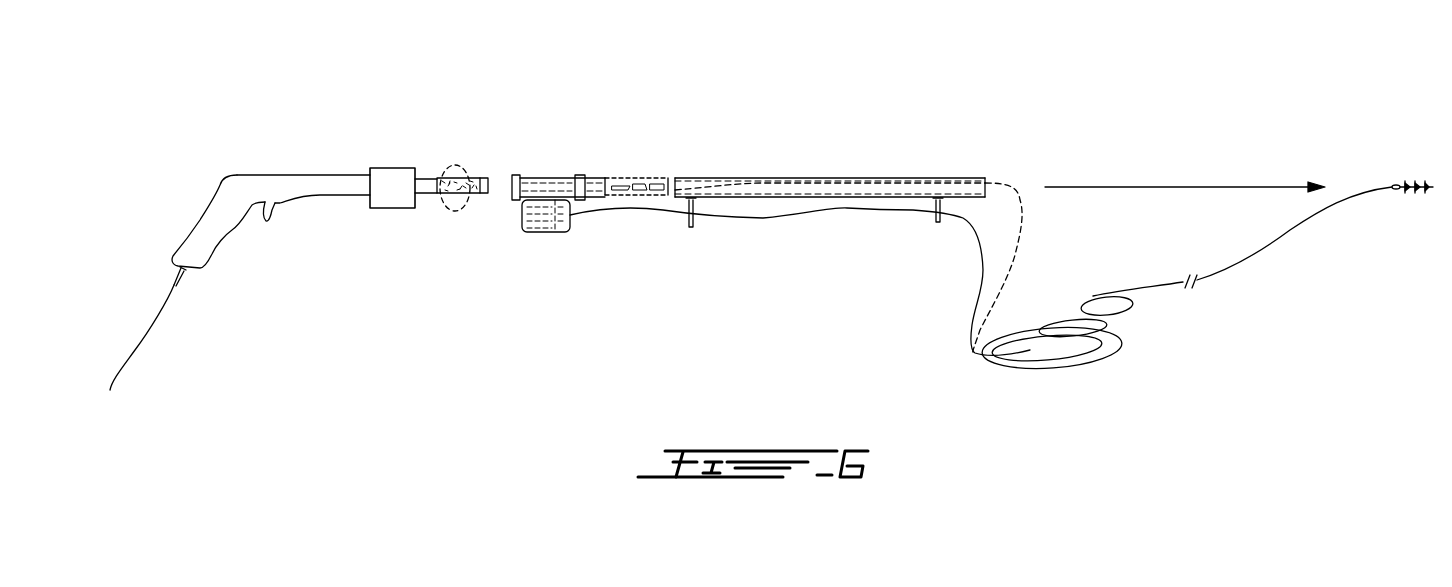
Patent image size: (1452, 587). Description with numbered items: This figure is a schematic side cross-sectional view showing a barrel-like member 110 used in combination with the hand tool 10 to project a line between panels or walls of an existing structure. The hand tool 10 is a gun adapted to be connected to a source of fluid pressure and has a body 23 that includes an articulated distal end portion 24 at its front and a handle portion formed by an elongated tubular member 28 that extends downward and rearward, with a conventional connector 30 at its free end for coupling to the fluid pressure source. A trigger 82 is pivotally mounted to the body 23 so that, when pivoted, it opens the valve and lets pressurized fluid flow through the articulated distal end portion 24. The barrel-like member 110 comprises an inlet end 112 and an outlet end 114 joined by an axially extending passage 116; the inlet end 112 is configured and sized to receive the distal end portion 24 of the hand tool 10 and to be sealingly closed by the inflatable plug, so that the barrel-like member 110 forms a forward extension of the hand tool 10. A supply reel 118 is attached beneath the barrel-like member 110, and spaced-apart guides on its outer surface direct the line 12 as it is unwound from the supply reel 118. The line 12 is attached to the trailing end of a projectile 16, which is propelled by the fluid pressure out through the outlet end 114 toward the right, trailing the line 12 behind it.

The hand tool 10 is at (307, 227).
The body 23 is at (336, 172).
The elongated tubular member 28 is at (208, 217).
The trigger 82 is at (277, 207).
The connector 30 is at (183, 273).
The articulated distal end portion 24 is at (477, 178).
The barrel-like member 110 is at (766, 205).
The inlet end 112 is at (505, 185).
The supply reel 118 is at (535, 228).
The axially extending passage 116 is at (847, 185).
The outlet end 114 is at (992, 180).
The line 12 is at (1263, 250).
The projectile 16 is at (1425, 170).